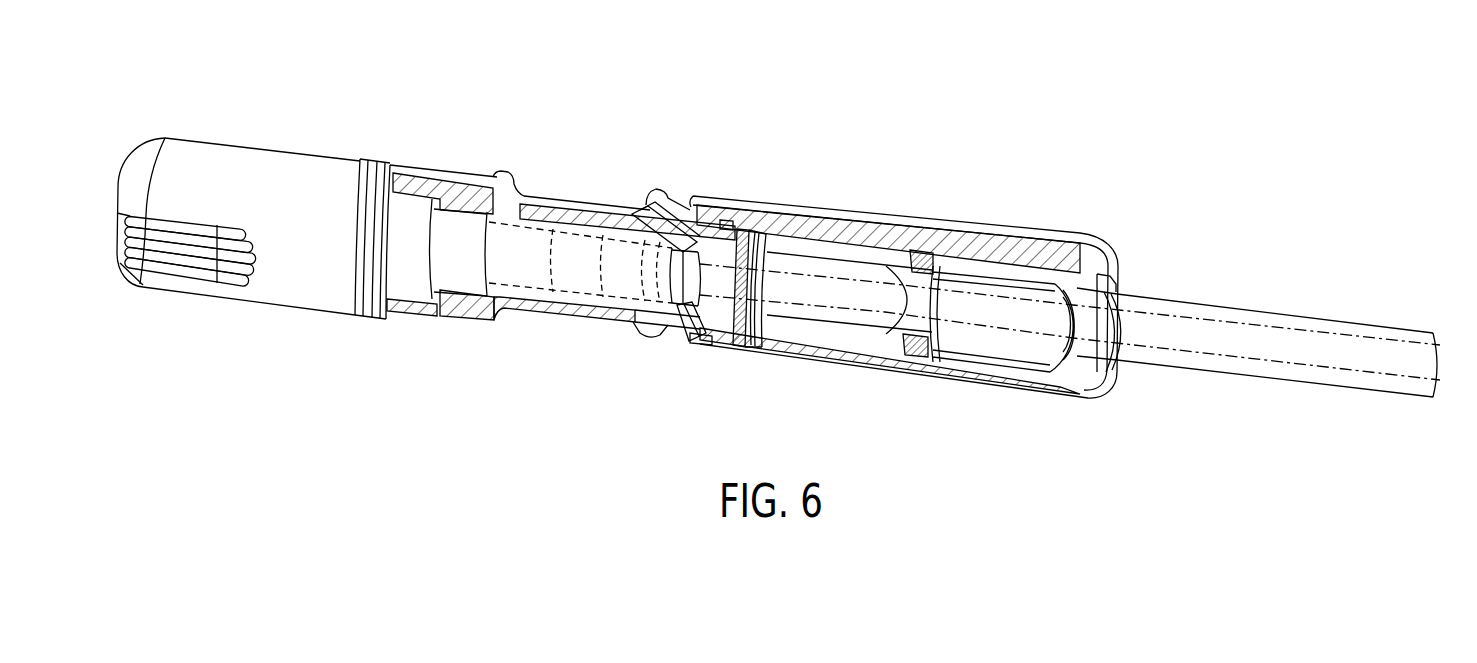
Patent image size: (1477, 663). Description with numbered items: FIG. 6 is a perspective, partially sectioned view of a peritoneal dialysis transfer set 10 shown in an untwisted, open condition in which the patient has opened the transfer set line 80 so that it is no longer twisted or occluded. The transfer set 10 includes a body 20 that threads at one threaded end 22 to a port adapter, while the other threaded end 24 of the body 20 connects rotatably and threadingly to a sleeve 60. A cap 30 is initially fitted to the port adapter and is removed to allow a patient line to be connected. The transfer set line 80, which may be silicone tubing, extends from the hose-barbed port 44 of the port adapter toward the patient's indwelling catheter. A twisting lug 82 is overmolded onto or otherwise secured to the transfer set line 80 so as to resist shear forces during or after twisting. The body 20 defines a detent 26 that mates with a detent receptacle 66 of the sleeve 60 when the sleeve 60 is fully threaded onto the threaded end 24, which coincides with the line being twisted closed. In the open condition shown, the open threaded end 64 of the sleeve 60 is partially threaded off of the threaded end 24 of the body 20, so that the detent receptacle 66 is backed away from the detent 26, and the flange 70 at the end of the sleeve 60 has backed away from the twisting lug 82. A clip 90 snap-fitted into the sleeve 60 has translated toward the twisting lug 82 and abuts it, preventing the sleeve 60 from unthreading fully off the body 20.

The PD transfer set 10 is at (855, 122).
The body 20 is at (520, 160).
The threaded end 22 is at (405, 163).
The threaded end 24 is at (676, 338).
The detent 26 is at (662, 191).
The cap 30 is at (134, 144).
The hose-barbed port 44 is at (614, 230).
The sleeve 60 is at (1092, 408).
The open threaded end 64 is at (707, 344).
The detent receptacle 66 is at (690, 205).
The flange 70 is at (1130, 278).
The transfer set line 80 is at (826, 318).
The twisting lug 82 is at (997, 310).
The clip 90 is at (934, 250).